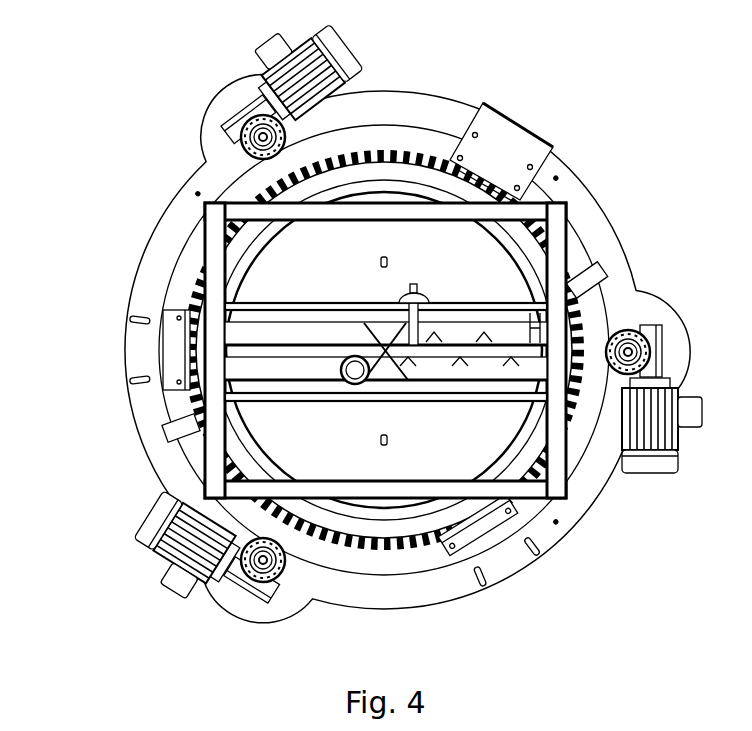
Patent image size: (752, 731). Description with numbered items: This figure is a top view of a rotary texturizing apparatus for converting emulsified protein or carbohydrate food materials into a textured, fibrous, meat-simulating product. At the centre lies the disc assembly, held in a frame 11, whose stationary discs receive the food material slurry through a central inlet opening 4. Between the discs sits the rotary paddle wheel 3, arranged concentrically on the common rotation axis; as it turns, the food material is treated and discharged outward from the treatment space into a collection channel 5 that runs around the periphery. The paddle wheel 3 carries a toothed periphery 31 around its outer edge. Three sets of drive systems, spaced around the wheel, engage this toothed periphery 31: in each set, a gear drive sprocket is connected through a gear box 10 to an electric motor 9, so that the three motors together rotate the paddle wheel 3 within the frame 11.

The rotary paddle wheel 3 is at (384, 407).
The toothed periphery 31 is at (348, 548).
The inlet opening 4 is at (340, 367).
The collection channel 5 is at (460, 512).
The electric motor 9 is at (363, 63).
The gear box 10 is at (243, 118).
The frame 11 is at (237, 190).